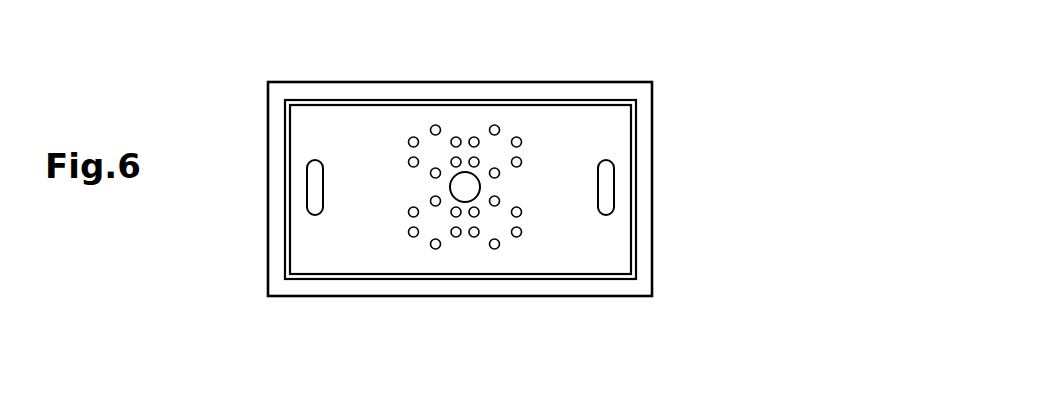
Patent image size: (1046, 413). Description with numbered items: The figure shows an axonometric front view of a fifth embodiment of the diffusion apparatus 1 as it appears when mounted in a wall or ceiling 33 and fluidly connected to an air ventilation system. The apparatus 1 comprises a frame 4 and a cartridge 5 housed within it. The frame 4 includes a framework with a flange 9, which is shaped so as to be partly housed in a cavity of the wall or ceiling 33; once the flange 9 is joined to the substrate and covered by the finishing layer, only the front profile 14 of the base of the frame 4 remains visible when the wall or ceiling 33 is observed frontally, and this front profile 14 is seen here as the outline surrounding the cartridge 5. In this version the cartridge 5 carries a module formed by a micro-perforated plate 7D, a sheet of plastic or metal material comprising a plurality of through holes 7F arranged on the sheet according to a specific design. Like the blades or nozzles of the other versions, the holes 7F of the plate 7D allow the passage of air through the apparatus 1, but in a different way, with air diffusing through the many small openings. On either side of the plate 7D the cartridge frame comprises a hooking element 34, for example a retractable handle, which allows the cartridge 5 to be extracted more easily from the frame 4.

The diffusion apparatus 1 is at (242, 98).
The frame 4 is at (352, 72).
The cartridge 5 is at (342, 260).
The micro-perforated plate 7D is at (372, 203).
The holes 7F is at (468, 187).
The flange 9 is at (640, 287).
The front profile 14 is at (637, 242).
The wall or ceiling 33 is at (701, 207).
The hooking element 34 is at (315, 187).